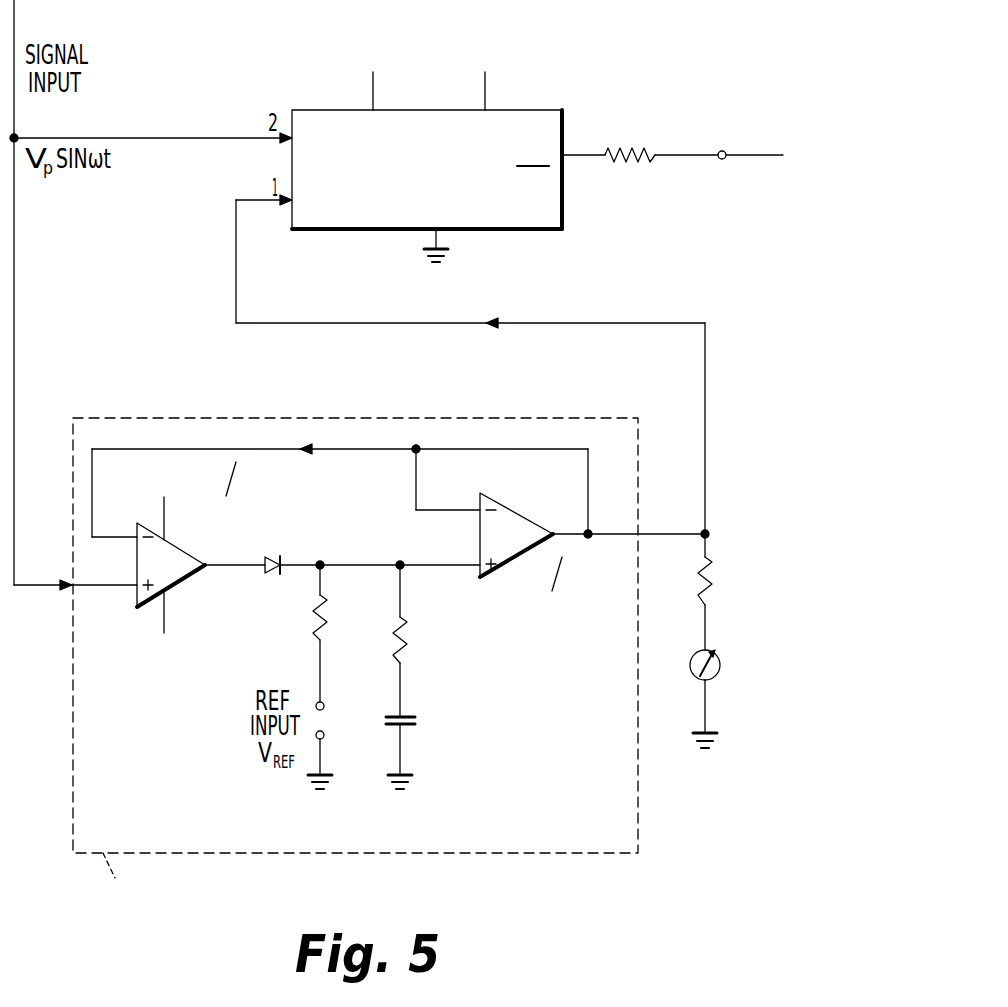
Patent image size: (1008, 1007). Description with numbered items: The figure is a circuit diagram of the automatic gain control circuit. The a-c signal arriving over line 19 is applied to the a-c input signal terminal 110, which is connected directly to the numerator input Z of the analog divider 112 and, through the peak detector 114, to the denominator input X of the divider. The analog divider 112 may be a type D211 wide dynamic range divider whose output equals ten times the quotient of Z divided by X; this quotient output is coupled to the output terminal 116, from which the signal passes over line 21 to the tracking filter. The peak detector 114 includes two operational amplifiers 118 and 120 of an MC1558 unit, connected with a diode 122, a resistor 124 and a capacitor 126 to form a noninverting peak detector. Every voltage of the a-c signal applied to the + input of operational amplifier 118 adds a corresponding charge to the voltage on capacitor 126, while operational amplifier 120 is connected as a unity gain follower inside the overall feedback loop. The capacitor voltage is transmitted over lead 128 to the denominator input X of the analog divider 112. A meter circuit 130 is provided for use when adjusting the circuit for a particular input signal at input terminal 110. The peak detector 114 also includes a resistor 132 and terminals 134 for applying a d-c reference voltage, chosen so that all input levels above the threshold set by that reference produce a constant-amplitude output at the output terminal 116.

The line 19 is at (24, 20).
The a-c input signal terminal 110 is at (20, 134).
The analog divider 112 is at (578, 100).
The peak detector 114 is at (142, 418).
The output terminal 116 is at (722, 151).
The line 21 is at (748, 157).
The operational amplifier 118 is at (197, 580).
The operational amplifier 120 is at (485, 580).
The diode 122 is at (276, 573).
The resistor 124 is at (392, 652).
The capacitor 126 is at (414, 716).
The lead 128 is at (705, 470).
The meter circuit 130 is at (771, 658).
The resistor 132 is at (328, 615).
The terminals 134 is at (326, 720).